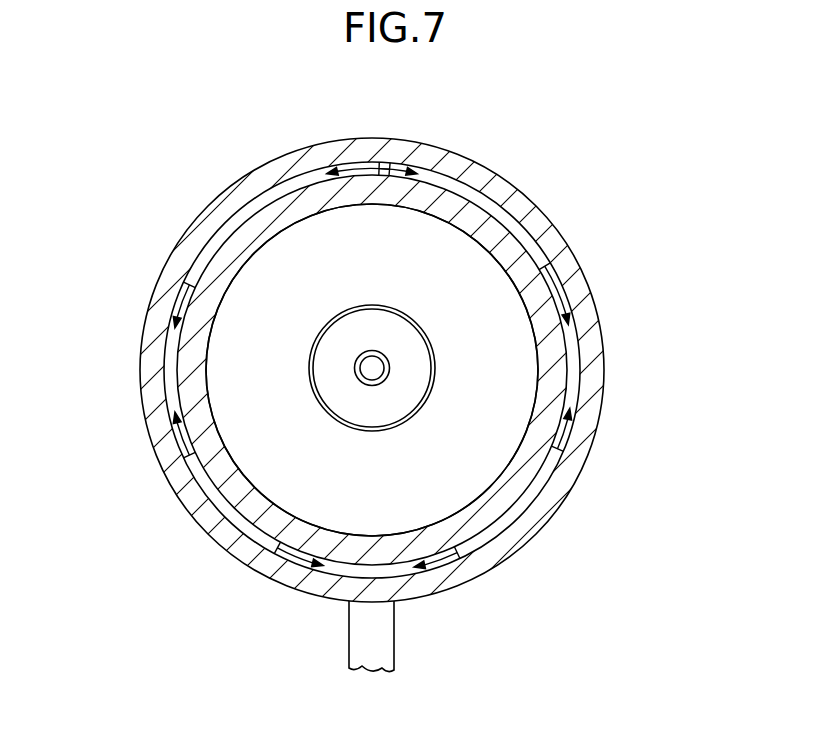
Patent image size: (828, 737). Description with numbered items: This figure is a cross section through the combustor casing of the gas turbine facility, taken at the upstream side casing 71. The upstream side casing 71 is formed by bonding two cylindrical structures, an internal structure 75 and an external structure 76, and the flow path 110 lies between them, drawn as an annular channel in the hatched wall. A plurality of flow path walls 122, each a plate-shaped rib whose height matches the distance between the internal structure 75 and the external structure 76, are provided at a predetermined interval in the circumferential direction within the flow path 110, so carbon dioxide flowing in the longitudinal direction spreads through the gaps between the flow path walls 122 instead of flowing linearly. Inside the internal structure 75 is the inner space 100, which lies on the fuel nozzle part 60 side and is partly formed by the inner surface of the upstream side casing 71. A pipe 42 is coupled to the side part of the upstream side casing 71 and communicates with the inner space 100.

The upstream side casing 71 is at (626, 131).
The external structure 76 is at (555, 247).
The internal structure 75 is at (500, 250).
The flow path 110 is at (217, 240).
The flow path walls 122 is at (388, 152).
The inner space 100 is at (457, 442).
The fuel nozzle part 60 is at (436, 367).
The pipe 42 is at (360, 636).